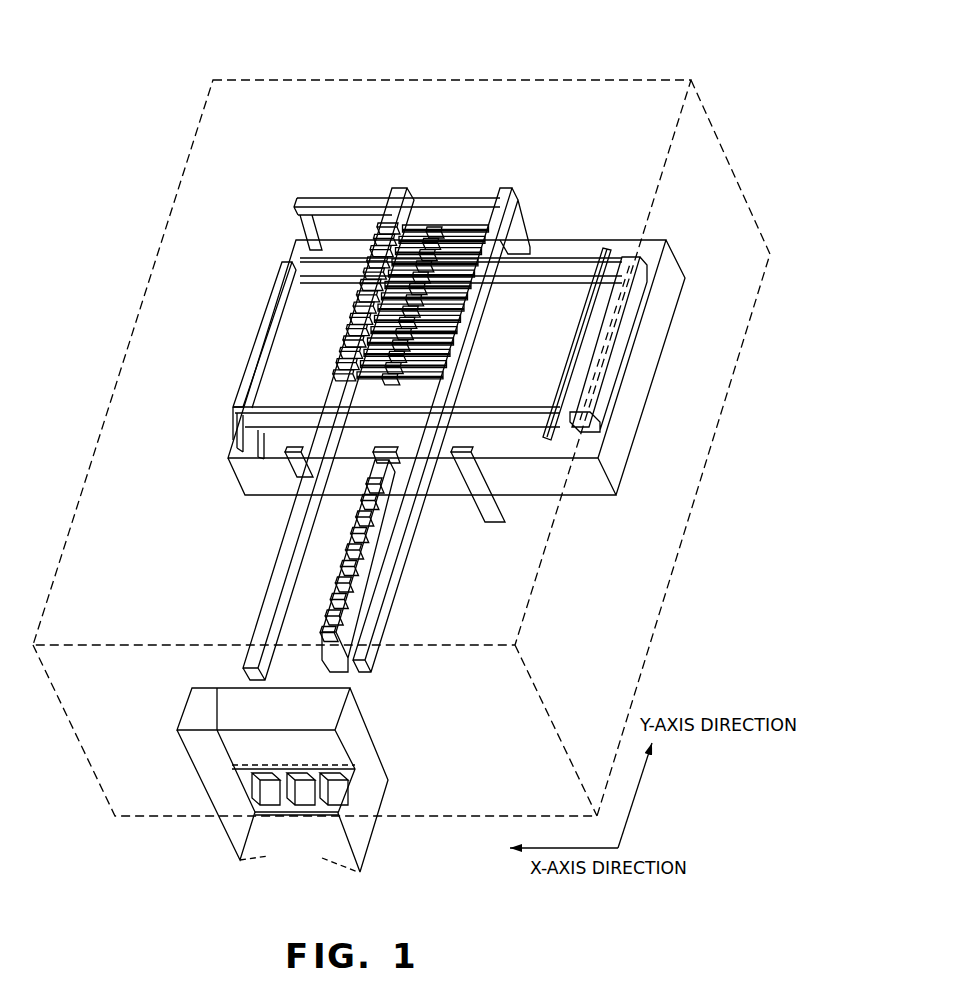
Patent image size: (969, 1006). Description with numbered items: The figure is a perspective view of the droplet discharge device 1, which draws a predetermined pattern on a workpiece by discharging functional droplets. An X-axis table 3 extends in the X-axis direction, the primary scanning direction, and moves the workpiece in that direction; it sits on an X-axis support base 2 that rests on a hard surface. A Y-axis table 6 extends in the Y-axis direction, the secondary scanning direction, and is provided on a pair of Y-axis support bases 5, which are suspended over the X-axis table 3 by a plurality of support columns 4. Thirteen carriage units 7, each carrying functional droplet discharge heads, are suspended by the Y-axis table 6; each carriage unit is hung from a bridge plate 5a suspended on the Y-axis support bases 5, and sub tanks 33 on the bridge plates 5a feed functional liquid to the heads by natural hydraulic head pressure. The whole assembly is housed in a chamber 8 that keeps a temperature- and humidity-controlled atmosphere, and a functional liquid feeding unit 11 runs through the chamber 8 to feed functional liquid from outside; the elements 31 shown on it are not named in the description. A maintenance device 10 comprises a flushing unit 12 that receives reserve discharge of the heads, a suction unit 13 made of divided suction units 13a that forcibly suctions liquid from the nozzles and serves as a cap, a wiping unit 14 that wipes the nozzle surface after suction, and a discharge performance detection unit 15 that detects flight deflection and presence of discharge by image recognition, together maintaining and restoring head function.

The droplet discharge device 1 is at (462, 60).
The X-axis support base 2 is at (668, 305).
The X-axis table 3 is at (648, 350).
The support columns 4 is at (290, 468).
The Y-axis support bases 5 is at (400, 183).
The bridge plate 5a is at (492, 293).
The Y-axis table 6 is at (393, 391).
The carriage units 7 is at (437, 212).
The chamber 8 is at (110, 370).
The maintenance device 10 is at (436, 559).
The functional liquid feeding unit 11 is at (253, 778).
The flushing unit 12 is at (238, 333).
The suction unit 13 is at (413, 566).
The divided suction units 13a is at (372, 507).
The wiping unit 14 is at (392, 460).
The discharge performance detection unit 15 is at (606, 250).
The cubic elements 31 is at (335, 805).
The sub tanks 33 is at (372, 232).